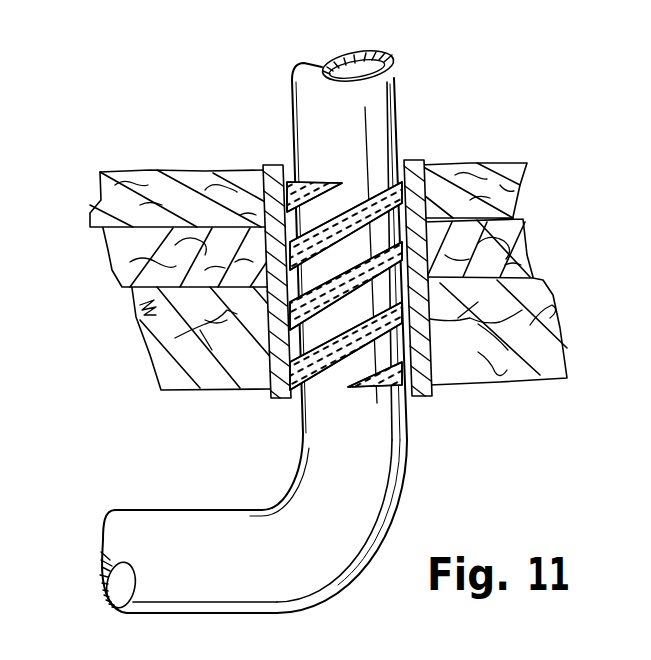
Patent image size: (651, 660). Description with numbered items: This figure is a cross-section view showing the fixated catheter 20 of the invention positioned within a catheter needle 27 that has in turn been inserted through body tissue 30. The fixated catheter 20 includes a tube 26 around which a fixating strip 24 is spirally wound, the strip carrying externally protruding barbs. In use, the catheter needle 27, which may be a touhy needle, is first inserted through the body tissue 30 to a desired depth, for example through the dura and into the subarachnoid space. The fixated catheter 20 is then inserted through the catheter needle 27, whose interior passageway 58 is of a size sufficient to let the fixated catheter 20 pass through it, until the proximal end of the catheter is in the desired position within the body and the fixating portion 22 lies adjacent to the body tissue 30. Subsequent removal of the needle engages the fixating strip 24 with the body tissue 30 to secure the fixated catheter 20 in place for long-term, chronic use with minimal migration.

The fixated catheter 20 is at (411, 65).
The fixating portion 22 is at (275, 315).
The fixating strip 24 is at (402, 182).
The tube 26 is at (185, 590).
The catheter needle 27 is at (426, 182).
The body tissue 30 is at (108, 298).
The interior passageway 58 is at (415, 412).